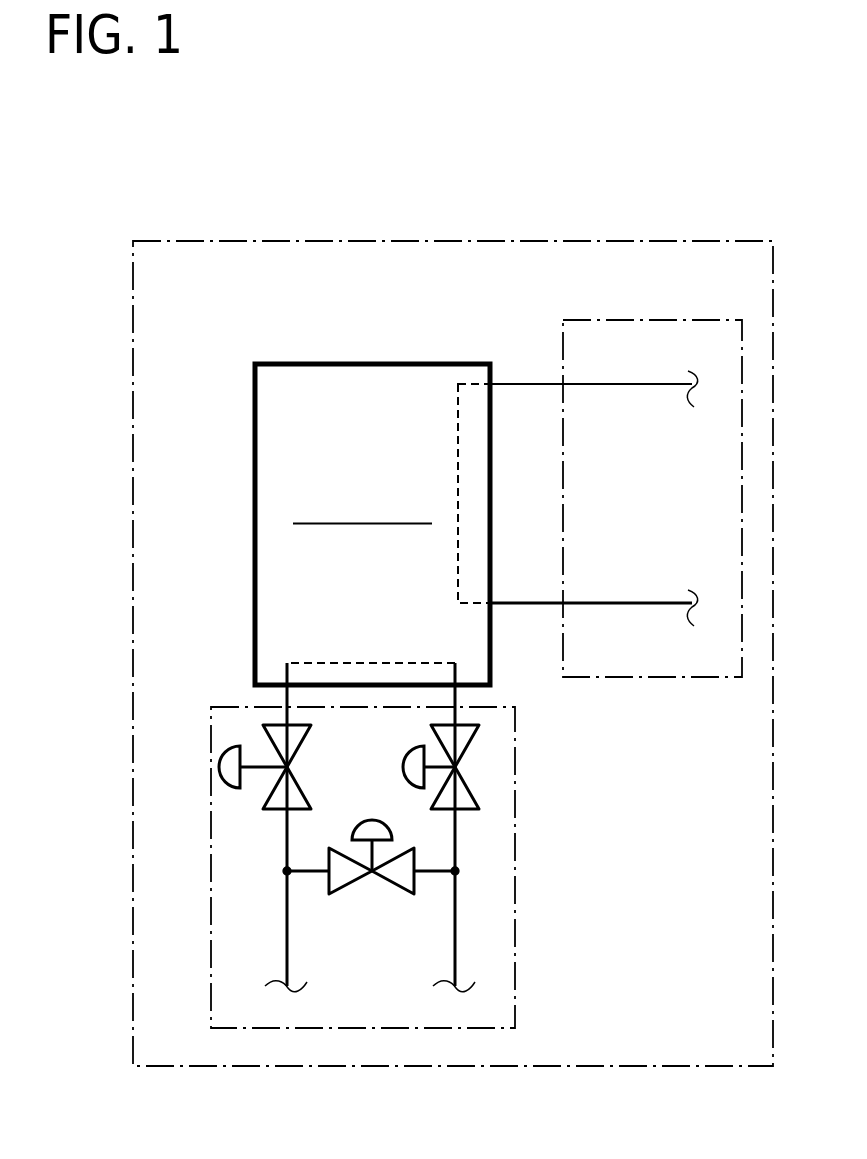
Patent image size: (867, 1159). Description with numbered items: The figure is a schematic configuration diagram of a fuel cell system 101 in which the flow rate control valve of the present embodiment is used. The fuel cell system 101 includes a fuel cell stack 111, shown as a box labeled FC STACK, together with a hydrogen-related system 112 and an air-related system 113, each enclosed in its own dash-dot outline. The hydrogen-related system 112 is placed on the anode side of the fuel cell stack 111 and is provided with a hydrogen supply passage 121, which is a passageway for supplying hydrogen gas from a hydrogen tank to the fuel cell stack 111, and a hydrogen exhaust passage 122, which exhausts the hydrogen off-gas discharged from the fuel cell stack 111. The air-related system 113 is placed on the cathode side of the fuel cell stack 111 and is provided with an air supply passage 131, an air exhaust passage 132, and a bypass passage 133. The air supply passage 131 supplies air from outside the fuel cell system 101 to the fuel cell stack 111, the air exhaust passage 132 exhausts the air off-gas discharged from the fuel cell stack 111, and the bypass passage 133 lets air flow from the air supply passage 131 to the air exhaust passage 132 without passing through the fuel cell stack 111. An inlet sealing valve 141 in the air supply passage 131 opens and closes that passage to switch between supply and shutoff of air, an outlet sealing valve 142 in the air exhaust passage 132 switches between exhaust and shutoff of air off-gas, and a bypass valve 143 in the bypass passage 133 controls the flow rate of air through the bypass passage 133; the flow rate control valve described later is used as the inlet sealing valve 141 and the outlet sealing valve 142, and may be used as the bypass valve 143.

The fuel cell system 101 is at (604, 239).
The fuel cell stack 111 is at (368, 386).
The hydrogen-related system 112 is at (617, 320).
The air-related system 113 is at (515, 925).
The hydrogen supply passage 121 is at (620, 386).
The hydrogen exhaust passage 122 is at (621, 603).
The air supply passage 131 is at (287, 845).
The air exhaust passage 132 is at (455, 843).
The bypass passage 133 is at (305, 872).
The inlet sealing valve 141 is at (228, 765).
The outlet sealing valve 142 is at (410, 765).
The bypass valve 143 is at (388, 879).